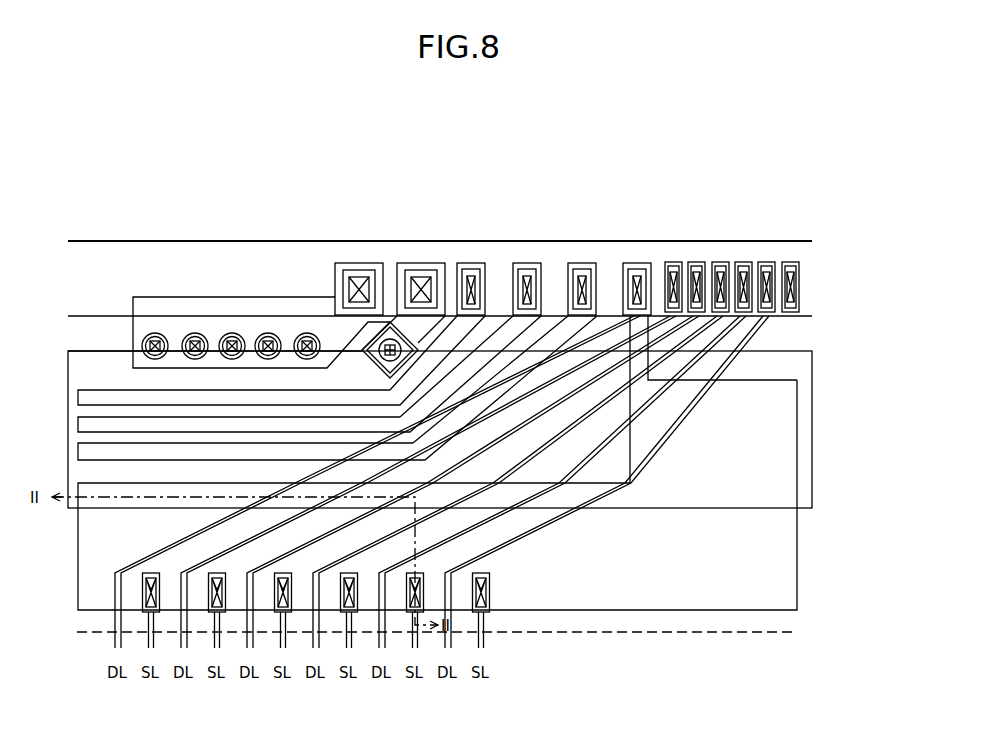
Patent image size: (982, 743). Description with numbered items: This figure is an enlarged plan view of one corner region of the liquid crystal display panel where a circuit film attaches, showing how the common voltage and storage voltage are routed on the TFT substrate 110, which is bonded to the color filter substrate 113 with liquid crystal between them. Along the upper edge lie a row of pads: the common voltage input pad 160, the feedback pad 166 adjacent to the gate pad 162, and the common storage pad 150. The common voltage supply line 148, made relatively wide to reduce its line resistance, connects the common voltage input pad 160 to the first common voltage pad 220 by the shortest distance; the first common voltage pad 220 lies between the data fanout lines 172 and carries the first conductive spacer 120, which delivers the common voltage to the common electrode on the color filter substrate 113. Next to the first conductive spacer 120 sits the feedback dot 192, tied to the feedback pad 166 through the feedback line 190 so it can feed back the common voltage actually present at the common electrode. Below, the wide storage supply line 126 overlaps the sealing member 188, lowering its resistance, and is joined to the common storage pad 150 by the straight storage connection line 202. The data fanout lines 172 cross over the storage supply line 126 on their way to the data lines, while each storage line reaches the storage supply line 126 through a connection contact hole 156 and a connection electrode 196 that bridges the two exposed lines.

The TFT substrate 110 is at (793, 241).
The color filter substrate 113 is at (812, 316).
The first conductive spacer 120 is at (142, 347).
The storage supply line 126 is at (797, 566).
The common voltage supply line 148 is at (208, 297).
The common storage pad 150 is at (637, 262).
The connection contact hole 156 is at (488, 606).
The common voltage input pad 160 is at (358, 262).
The gate pad 162 is at (471, 262).
The feedback pad 166 is at (421, 262).
The data fanout line 172 is at (140, 566).
The sealing member 188 is at (812, 393).
The feedback line 190 is at (335, 318).
The feedback dot 192 is at (377, 367).
The connection electrode 196 is at (488, 584).
The storage connection line 202 is at (755, 352).
The first common voltage pad 220 is at (157, 333).